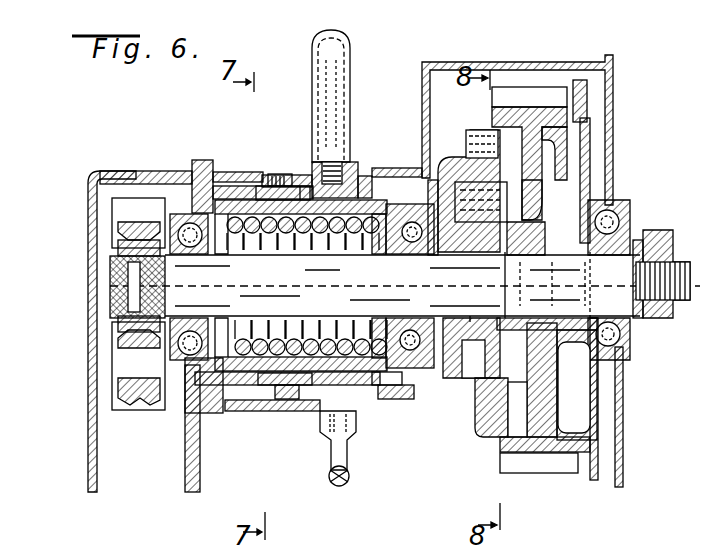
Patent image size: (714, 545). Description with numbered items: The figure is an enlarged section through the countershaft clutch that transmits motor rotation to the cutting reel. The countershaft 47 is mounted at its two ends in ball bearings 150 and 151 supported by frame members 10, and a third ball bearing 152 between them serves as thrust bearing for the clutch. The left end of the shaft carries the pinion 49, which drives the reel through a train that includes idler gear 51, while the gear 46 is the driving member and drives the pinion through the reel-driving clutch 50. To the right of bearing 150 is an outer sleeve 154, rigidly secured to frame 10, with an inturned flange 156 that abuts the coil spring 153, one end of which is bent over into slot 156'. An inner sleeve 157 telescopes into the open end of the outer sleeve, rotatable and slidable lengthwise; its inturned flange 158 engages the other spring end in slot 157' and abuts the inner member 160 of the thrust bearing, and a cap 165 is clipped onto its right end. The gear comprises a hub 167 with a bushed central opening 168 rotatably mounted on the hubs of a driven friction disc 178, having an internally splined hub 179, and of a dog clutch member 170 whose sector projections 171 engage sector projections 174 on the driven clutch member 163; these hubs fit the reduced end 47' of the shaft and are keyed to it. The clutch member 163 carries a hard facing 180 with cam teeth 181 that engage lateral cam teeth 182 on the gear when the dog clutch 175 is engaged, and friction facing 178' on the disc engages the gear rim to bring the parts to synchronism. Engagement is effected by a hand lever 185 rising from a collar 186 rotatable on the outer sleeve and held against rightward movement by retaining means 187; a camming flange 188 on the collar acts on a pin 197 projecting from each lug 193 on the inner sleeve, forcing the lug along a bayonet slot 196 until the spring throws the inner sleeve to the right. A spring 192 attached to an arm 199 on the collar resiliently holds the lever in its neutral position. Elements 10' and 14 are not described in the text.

The frame member 10 is at (261, 262).
The housing wall 10' is at (176, 425).
The cover 14 is at (76, 157).
The gear 46 is at (522, 92).
The countershaft 47 is at (89, 287).
The reduced end of the shaft 47' is at (652, 296).
The pinion 49 is at (120, 210).
The reel-driving clutch 50 is at (256, 455).
The idler gear 51 is at (118, 402).
The ball bearing 150 is at (190, 250).
The ball bearing 151 is at (616, 224).
The ball bearing 152 is at (410, 330).
The coil spring 153 is at (300, 248).
The outer sleeve 154 is at (200, 168).
The inturned flange 156 is at (301, 244).
The slot 156' is at (291, 328).
The inner sleeve 157 is at (361, 323).
The slot 157' is at (374, 250).
The inturned flange 158 is at (397, 262).
The inner member 160 is at (432, 255).
The driven clutch member 163 is at (444, 178).
The cap 165 is at (404, 400).
The hub 167 is at (566, 190).
The bushed central opening 168 is at (574, 340).
The dog clutch member 170 is at (516, 258).
The sector projection 171 is at (497, 320).
The sector projection 174 is at (495, 222).
The dog clutch 175 is at (495, 464).
The driven friction disc 178 is at (616, 171).
The friction facing 178' is at (616, 92).
The internally splined hub 179 is at (580, 290).
The hard facing 180 is at (500, 428).
The cam tooth 181 is at (512, 412).
The cam tooth 182 is at (528, 403).
The hand lever 185 is at (332, 52).
The collar 186 is at (352, 165).
The retaining means 187 is at (360, 175).
The camming flange 188 is at (302, 186).
The spring 192 is at (332, 478).
The lug 193 is at (250, 186).
The bayonet slot 196 is at (242, 178).
The pin 197 is at (278, 175).
The arm 199 is at (330, 426).